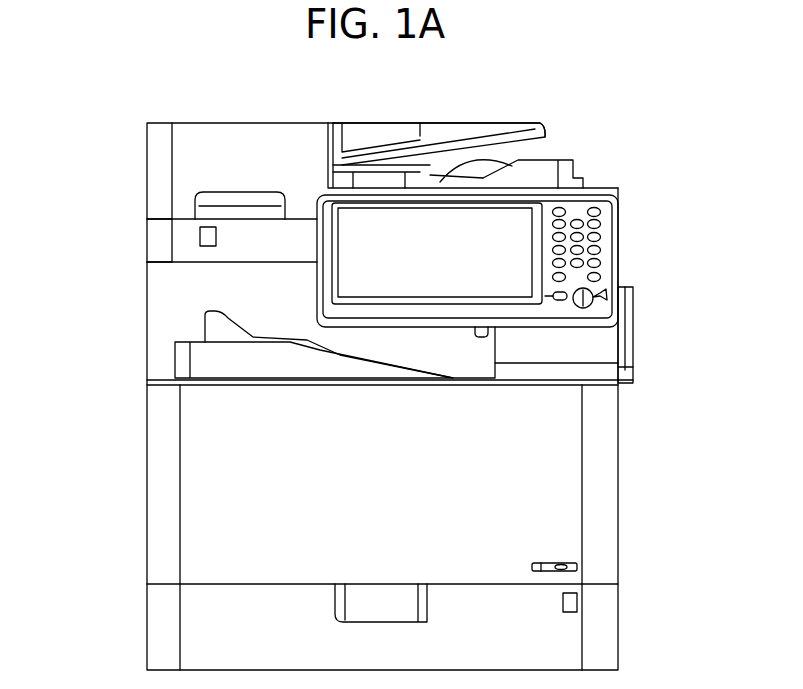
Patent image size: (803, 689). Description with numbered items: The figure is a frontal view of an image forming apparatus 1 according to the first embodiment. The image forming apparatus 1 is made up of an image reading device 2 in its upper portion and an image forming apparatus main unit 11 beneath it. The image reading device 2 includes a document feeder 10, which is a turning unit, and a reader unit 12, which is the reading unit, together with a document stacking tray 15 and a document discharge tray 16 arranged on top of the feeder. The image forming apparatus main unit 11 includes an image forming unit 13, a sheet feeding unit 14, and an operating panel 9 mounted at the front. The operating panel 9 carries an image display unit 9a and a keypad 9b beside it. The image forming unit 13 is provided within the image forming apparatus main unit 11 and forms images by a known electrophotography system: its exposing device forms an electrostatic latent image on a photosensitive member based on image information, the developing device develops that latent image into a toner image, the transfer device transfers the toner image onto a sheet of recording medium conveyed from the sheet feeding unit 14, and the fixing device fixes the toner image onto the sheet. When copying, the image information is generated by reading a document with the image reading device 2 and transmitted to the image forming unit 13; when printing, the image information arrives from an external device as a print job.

The image forming apparatus 1 is at (117, 100).
The image reading device 2 is at (179, 192).
The document feeder 10 is at (147, 175).
The reader unit 12 is at (145, 230).
The image forming apparatus main unit 11 is at (147, 365).
The document stacking tray 15 is at (395, 128).
The document discharge tray 16 is at (473, 126).
The operating panel 9 is at (499, 314).
The image display unit 9a is at (423, 282).
The keypad 9b is at (598, 272).
The image forming unit 13 is at (607, 487).
The sheet feeding unit 14 is at (607, 643).